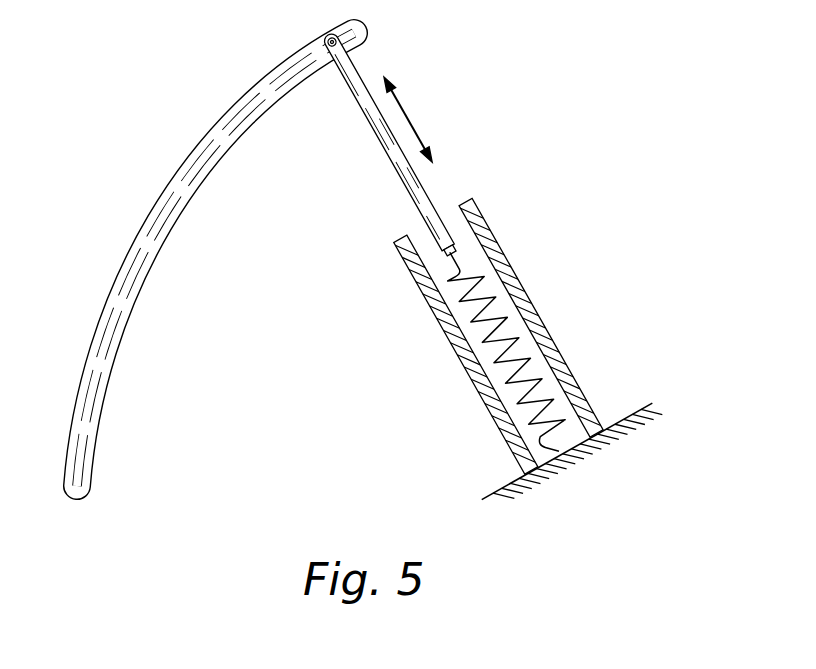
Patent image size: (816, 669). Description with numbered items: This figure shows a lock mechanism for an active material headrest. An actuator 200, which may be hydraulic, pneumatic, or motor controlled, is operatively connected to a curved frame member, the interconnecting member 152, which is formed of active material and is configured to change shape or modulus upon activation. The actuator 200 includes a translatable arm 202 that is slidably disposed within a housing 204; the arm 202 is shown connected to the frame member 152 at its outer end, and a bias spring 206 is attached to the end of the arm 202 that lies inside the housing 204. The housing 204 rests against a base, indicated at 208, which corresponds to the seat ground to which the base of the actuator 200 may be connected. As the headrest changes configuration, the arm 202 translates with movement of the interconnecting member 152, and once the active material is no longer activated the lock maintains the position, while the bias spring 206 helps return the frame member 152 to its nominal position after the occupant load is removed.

The interconnecting member 152 is at (193, 155).
The actuator 200 is at (625, 142).
The translatable arm 202 is at (401, 138).
The housing 204 is at (498, 336).
The bias spring 206 is at (506, 350).
The ground / base 208 is at (572, 457).